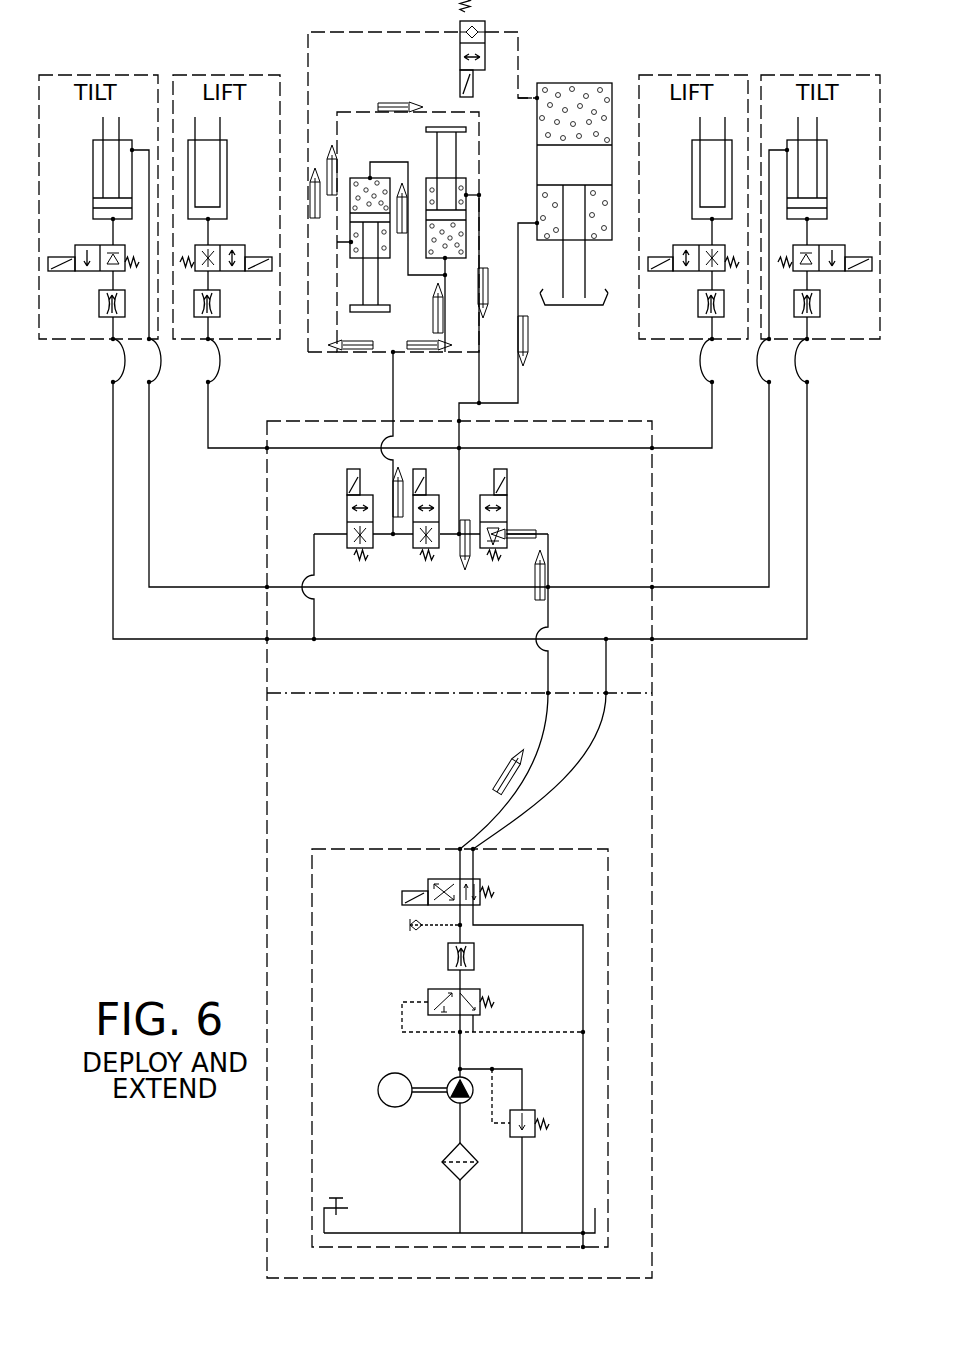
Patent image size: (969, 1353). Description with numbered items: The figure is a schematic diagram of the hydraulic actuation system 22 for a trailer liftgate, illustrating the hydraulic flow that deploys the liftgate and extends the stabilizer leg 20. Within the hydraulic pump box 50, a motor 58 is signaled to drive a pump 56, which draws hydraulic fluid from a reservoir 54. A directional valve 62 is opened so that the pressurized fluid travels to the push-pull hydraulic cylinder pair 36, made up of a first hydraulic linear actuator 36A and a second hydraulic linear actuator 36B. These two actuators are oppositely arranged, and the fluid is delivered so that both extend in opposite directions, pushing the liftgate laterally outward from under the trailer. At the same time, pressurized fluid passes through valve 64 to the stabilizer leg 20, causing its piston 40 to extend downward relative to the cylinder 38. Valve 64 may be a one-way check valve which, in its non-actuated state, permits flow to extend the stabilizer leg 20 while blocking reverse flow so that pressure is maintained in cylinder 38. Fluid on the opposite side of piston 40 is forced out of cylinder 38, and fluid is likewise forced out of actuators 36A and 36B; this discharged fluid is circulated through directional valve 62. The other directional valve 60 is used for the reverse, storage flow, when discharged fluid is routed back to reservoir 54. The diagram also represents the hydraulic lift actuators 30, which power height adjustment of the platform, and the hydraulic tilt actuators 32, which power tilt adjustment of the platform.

The stabilizer leg 20 is at (585, 58).
The hydraulic actuation system 22 is at (186, 740).
The hydraulic lift actuator 30 is at (227, 186).
The hydraulic tilt actuator 32 is at (93, 160).
The push-pull hydraulic cylinder pair 36 is at (386, 103).
The first hydraulic linear actuator 36A is at (437, 155).
The second hydraulic linear actuator 36B is at (350, 248).
The cylinder 38 is at (577, 83).
The piston 40 is at (586, 268).
The hydraulic pump box 50 is at (655, 760).
The reservoir 54 is at (412, 1232).
The pump 56 is at (450, 1108).
The motor 58 is at (388, 1108).
The directional valve 60 is at (347, 490).
The directional valve 62 is at (422, 534).
The valve 64 is at (460, 60).